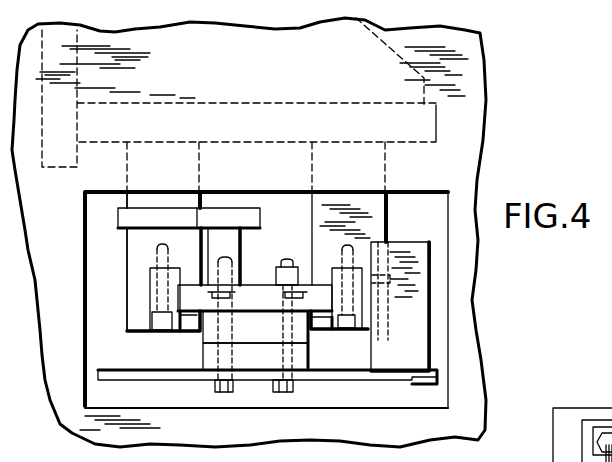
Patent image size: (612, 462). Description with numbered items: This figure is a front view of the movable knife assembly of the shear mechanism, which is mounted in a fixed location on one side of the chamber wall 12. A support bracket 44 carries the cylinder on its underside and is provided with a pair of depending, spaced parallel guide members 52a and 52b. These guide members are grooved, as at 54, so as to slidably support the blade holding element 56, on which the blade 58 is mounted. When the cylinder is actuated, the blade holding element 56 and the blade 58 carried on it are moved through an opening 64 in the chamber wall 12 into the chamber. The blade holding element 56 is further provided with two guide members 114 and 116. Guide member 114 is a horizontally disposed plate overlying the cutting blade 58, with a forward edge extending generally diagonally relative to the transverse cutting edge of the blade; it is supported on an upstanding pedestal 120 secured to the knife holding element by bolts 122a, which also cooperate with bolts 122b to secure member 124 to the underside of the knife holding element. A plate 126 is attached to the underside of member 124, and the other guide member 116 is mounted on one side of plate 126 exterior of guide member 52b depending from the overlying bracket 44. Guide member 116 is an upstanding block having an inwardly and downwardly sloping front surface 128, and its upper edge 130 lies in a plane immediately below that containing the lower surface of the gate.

The chamber wall 12 is at (464, 281).
The support bracket 44 is at (208, 113).
The guide member 52a is at (133, 244).
The guide member 52b is at (371, 203).
The groove 54 is at (188, 314).
The blade holding element 56 is at (233, 324).
The blade 58 is at (248, 293).
The opening 64 is at (441, 349).
The guide member 114 is at (220, 218).
The guide member 116 is at (429, 259).
The pedestal 120 is at (240, 244).
The bolts 122a is at (213, 386).
The bolts 122b is at (298, 386).
The member 124 is at (249, 358).
The plate 126 is at (412, 384).
The front surface 128 is at (418, 318).
The upper edge 130 is at (397, 245).